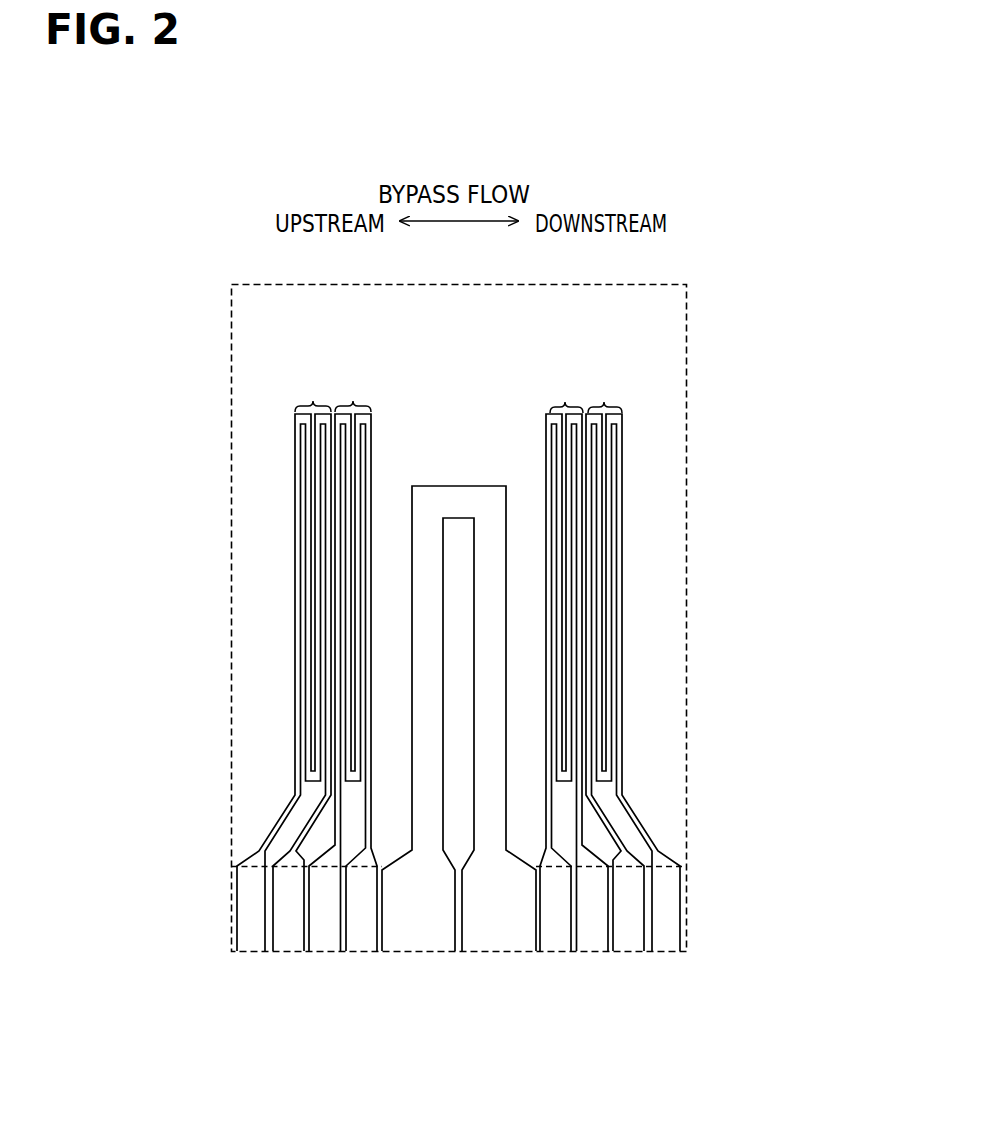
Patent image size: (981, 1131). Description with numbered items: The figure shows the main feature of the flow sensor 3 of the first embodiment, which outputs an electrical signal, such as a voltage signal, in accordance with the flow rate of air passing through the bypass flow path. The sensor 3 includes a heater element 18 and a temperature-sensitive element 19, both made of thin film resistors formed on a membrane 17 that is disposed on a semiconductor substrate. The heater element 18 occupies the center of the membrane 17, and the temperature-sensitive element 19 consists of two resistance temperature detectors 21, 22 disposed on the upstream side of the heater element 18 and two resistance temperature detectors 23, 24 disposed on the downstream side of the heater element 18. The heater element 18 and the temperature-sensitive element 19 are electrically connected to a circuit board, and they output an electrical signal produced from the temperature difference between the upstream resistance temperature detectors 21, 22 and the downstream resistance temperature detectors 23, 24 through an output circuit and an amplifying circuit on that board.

The flow sensor 3 is at (757, 268).
The membrane 17 is at (689, 456).
The heater element 18 is at (461, 485).
The temperature-sensitive element 19 is at (380, 411).
The resistance temperature detector 21 is at (313, 401).
The resistance temperature detector 22 is at (353, 401).
The resistance temperature detector 23 is at (565, 402).
The resistance temperature detector 24 is at (604, 402).